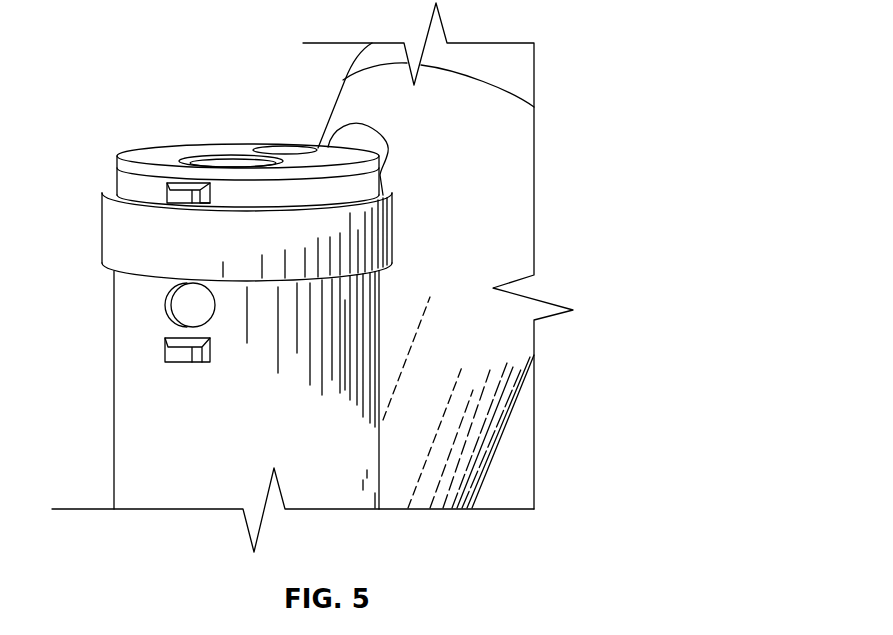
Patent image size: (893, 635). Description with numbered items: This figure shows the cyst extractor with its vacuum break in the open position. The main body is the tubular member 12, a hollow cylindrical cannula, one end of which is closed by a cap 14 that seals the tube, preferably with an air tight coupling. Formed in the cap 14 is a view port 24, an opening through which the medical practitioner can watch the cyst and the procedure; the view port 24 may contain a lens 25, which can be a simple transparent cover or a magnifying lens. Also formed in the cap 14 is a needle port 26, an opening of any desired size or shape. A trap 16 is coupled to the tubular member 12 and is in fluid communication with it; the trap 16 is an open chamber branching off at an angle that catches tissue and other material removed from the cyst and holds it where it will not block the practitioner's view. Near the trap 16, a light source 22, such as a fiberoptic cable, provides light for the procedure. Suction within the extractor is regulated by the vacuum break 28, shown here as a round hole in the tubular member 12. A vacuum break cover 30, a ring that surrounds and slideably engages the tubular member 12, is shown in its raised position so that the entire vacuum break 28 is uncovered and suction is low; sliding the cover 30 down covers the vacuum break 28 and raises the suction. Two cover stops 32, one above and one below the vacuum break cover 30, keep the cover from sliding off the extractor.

The tubular member 12 is at (113, 462).
The cap 14 is at (134, 157).
The trap 16 is at (525, 343).
The light source 22 is at (380, 150).
The view port 24 is at (190, 159).
The lens 25 is at (227, 164).
The needle port 26 is at (287, 153).
The vacuum break 28 is at (192, 300).
The vacuum break cover 30 is at (103, 256).
The cover stop 32 is at (187, 198).